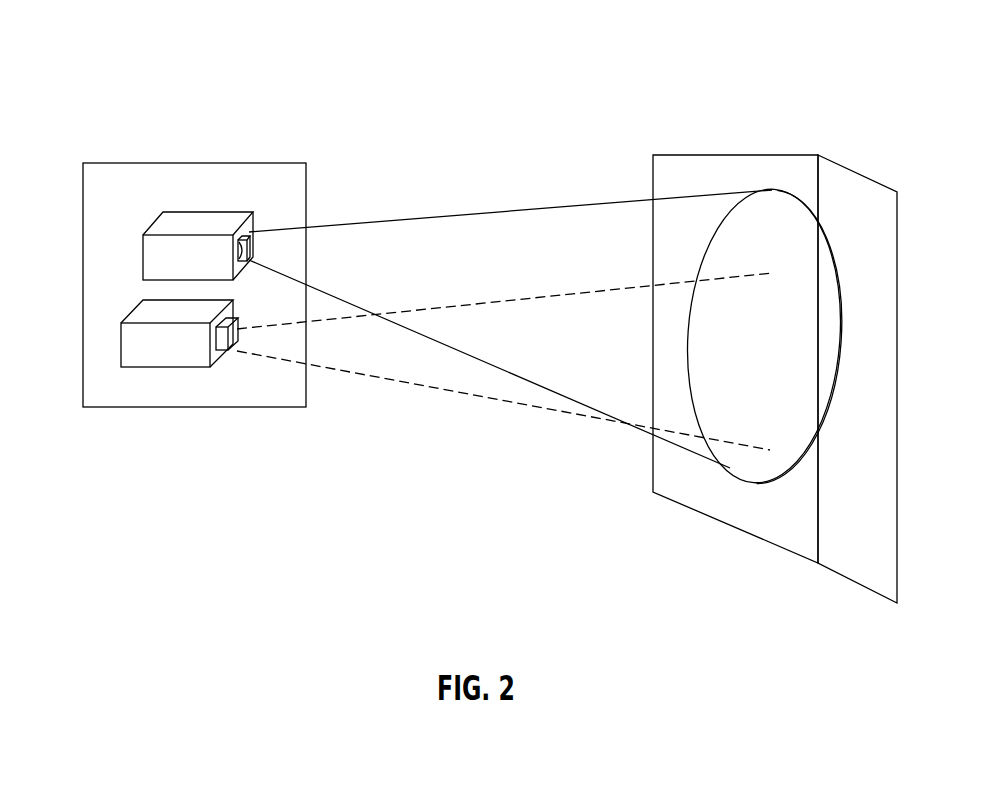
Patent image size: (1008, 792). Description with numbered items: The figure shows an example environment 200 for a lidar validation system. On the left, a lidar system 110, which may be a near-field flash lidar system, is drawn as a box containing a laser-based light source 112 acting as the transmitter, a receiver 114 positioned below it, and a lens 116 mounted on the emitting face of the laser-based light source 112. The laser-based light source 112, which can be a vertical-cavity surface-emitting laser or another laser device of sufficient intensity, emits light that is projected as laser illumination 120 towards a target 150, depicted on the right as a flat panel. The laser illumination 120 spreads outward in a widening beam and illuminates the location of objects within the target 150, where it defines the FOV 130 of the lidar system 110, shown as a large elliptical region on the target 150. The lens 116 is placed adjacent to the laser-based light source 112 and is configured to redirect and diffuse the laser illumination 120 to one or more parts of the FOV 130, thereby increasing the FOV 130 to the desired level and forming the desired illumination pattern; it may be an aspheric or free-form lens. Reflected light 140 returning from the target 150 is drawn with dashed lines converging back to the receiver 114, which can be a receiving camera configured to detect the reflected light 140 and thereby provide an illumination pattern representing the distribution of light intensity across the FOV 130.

The environment 200 is at (134, 67).
The lidar system 110 is at (156, 163).
The laser-based light source 112 is at (143, 258).
The receiver 114 is at (121, 345).
The lens 116 is at (250, 233).
The laser illumination 120 is at (500, 212).
The FOV 130 is at (779, 227).
The reflected light 140 is at (553, 410).
The target 150 is at (852, 178).